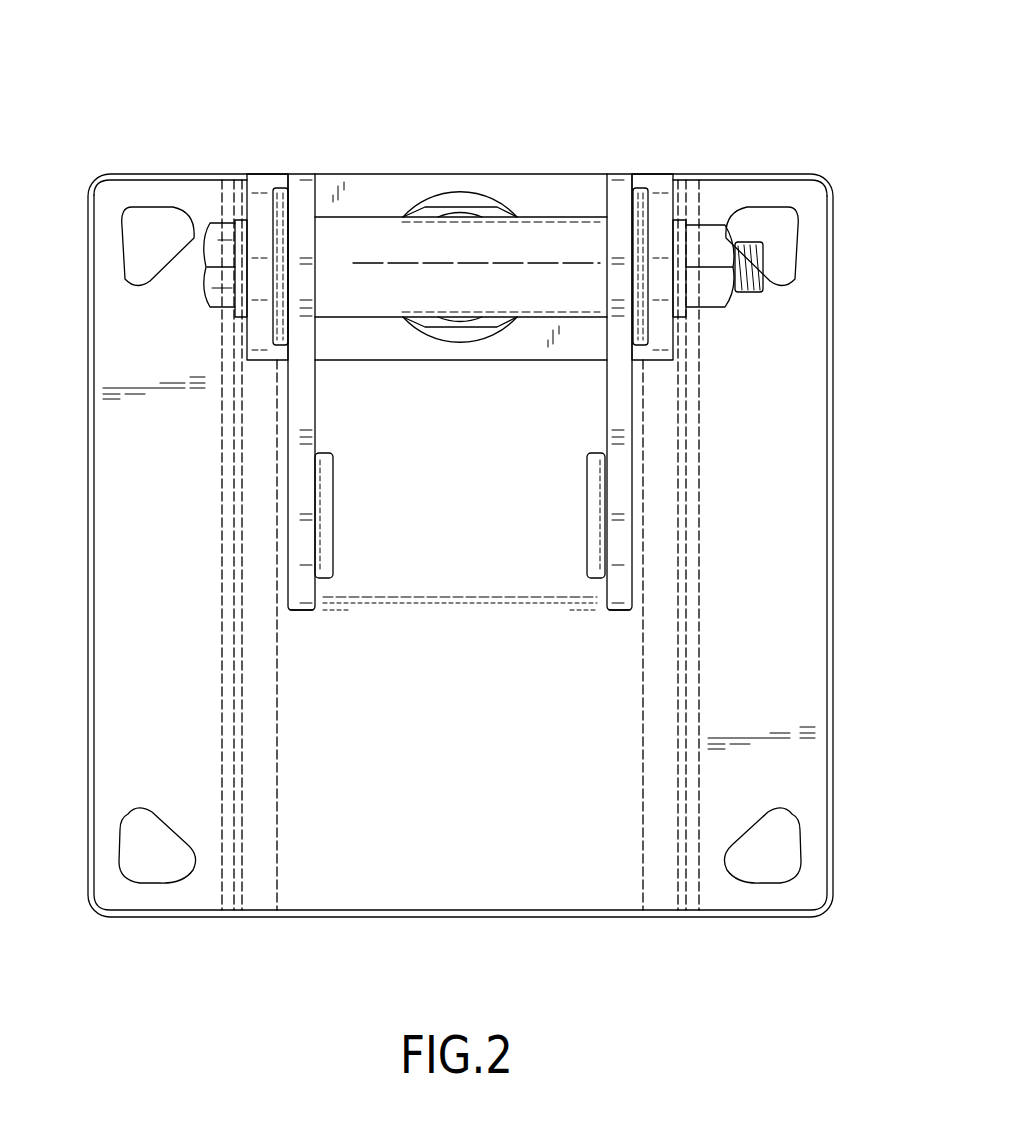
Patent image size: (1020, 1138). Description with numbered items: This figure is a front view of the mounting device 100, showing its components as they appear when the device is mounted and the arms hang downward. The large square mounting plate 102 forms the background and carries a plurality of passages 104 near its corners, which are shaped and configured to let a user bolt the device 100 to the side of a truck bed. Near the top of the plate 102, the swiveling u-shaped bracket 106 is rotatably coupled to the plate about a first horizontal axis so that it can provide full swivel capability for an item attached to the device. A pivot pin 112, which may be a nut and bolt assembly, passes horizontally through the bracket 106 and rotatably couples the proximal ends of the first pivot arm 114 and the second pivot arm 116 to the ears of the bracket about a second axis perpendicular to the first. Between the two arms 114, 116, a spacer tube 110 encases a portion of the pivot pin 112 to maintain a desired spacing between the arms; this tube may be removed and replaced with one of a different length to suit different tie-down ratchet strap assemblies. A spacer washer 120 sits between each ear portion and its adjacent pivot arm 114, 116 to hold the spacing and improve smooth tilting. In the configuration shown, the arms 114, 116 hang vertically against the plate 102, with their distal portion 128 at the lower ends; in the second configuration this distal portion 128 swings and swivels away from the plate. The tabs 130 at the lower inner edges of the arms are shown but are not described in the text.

The mounting device 100 is at (187, 67).
The mounting plate 102 is at (480, 829).
The passages 104 is at (803, 838).
The u-shaped bracket 106 is at (545, 183).
The spacer tube 110 is at (480, 294).
The pivot pin 112 is at (765, 266).
The first pivot arm 114 is at (302, 415).
The second pivot arm 116 is at (615, 415).
The spacer washer 120 is at (277, 176).
The distal portion 128 is at (300, 612).
The tab 130 is at (323, 580).